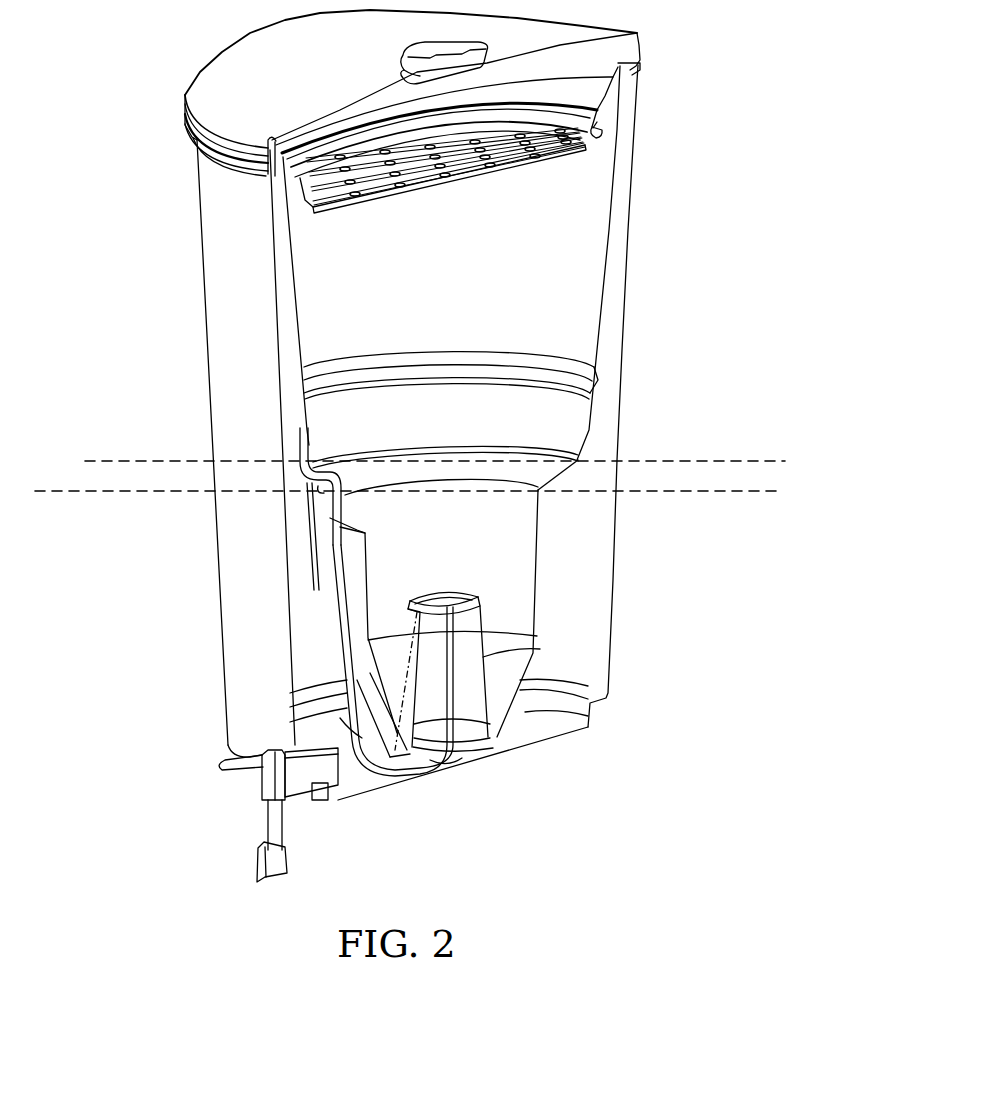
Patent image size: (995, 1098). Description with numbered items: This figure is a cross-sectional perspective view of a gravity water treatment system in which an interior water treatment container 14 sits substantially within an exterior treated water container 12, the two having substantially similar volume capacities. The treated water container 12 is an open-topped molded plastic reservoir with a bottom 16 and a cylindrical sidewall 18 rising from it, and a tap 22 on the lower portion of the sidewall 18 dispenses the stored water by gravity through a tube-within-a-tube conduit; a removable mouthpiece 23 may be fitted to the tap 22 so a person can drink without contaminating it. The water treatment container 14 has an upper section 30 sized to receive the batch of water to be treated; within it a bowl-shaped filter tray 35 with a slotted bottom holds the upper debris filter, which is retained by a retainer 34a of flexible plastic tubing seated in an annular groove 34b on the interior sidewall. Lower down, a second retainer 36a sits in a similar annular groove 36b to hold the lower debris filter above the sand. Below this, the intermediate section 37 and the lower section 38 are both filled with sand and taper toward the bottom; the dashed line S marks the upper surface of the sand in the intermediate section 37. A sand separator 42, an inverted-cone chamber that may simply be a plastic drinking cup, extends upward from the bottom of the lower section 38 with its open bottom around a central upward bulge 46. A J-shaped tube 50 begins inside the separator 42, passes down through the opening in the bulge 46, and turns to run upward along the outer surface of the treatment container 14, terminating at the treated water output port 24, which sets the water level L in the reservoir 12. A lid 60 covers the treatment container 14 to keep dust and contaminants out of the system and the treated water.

The exterior treated water container 12 is at (248, 281).
The interior water treatment container 14 is at (565, 259).
The bottom 16 is at (535, 748).
The cylindrical sidewall 18 is at (199, 218).
The tap 22 is at (265, 773).
The removable mouthpiece 23 is at (291, 866).
The treated water output port 24 is at (300, 440).
The upper section 30 is at (560, 281).
The retainer 34a is at (600, 134).
The annular groove 34b is at (595, 128).
The filter tray 35 is at (412, 194).
The retainer 36a is at (600, 381).
The annular groove 36b is at (597, 372).
The intermediate section 37 is at (540, 478).
The lower section 38 is at (538, 540).
The sand separator 42 is at (487, 660).
The upward bulge 46 is at (447, 770).
The J-shaped tube 50 is at (335, 520).
The lid 60 is at (334, 69).
The upper surface of the sand S is at (130, 460).
The water level L is at (100, 493).